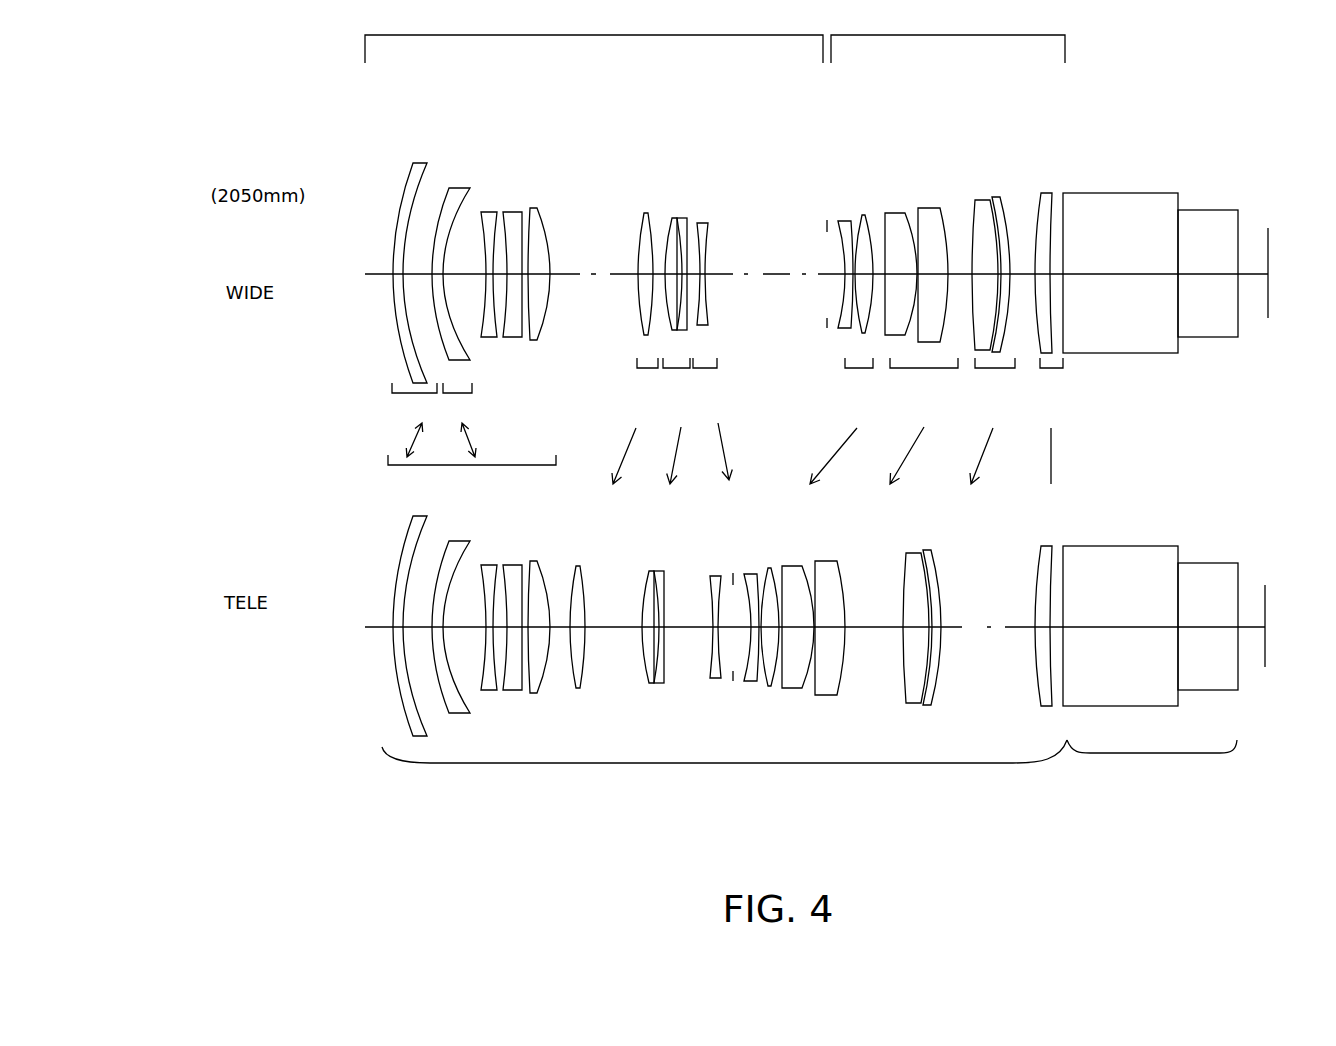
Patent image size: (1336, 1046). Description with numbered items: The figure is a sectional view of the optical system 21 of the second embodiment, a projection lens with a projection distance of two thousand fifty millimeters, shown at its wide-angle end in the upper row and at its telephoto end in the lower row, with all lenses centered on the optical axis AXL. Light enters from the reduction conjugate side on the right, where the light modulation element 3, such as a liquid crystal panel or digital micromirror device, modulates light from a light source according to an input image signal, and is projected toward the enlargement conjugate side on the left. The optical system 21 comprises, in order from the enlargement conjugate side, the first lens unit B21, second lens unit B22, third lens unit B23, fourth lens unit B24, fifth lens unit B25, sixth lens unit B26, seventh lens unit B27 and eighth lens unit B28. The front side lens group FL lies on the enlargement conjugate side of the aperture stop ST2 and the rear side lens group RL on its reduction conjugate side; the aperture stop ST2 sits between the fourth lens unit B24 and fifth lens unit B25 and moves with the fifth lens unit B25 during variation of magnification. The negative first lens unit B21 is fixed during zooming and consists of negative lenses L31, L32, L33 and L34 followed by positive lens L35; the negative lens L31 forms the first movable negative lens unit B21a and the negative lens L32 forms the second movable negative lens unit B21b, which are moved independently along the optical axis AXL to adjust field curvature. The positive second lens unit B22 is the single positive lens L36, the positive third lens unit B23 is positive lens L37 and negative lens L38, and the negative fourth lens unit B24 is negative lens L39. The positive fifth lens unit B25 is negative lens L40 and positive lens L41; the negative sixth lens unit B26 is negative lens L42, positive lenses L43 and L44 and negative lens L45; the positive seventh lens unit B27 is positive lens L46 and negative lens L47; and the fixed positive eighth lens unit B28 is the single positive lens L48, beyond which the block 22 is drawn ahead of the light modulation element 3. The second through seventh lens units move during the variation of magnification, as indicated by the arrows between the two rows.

The negative lens L31 is at (418, 163).
The negative lens L32 is at (455, 188).
The negative lens L33 is at (490, 212).
The negative lens L34 is at (520, 212).
The positive lens L35 is at (538, 208).
The positive lens L36 is at (645, 212).
The positive lens L37 is at (673, 218).
The negative lens L38 is at (683, 218).
The negative lens L39 is at (704, 223).
The aperture stop ST2 is at (827, 225).
The negative lens L40 is at (843, 221).
The positive lens L41 is at (866, 215).
The negative lens L42 is at (895, 213).
The positive lens L43 is at (910, 213).
The positive lens L44 is at (920, 207).
The negative lens L45 is at (942, 205).
The positive lens L46 is at (982, 205).
The negative lens L47 is at (1000, 197).
The positive lens L48 is at (1048, 195).
The light modulation element 3 is at (1265, 598).
The first lens unit B21 is at (473, 530).
The negative lens unit B21a is at (412, 420).
The negative lens unit B21b is at (473, 420).
The second lens unit B22 is at (635, 421).
The third lens unit B23 is at (681, 421).
The fourth lens unit B24 is at (718, 419).
The fifth lens unit B25 is at (847, 421).
The sixth lens unit B26 is at (924, 421).
The seventh lens unit B27 is at (996, 421).
The eighth lens unit B28 is at (1060, 421).
The optical system 21 is at (698, 768).
The prism unit 22 is at (1135, 753).
The front side lens group FL is at (594, 35).
The rear side lens group RL is at (948, 35).
The optical axis AXL is at (390, 273).